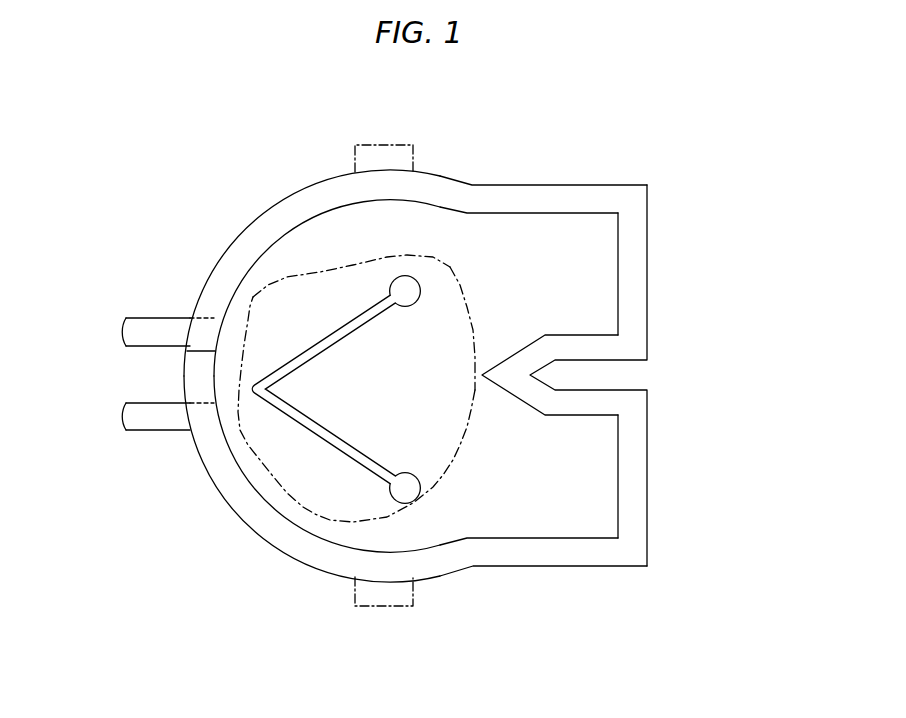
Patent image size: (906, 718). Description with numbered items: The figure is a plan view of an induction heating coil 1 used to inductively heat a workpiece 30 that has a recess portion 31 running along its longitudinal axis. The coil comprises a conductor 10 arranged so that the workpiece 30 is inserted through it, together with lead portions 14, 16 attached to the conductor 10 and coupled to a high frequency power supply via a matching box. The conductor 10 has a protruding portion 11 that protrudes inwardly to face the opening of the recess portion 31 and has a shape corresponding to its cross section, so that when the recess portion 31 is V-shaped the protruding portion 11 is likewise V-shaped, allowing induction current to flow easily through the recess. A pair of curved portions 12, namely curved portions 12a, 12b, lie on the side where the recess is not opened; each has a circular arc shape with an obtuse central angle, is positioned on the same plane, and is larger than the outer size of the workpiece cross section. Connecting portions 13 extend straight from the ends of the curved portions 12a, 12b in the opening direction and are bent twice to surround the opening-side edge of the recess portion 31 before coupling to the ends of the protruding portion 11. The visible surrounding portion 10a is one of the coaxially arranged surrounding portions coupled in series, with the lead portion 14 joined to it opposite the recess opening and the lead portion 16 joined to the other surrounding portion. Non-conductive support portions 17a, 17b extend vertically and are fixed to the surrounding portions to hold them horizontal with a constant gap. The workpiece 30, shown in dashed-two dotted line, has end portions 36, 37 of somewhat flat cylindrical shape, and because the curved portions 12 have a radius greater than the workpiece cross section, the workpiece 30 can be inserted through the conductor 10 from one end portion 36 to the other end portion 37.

The induction heating coil 1 is at (550, 128).
The conductor 10 is at (656, 188).
The surrounding portion 10a is at (656, 233).
The protruding portion 11 is at (509, 354).
The curved portions 12 is at (308, 376).
The curved portion 12a is at (272, 208).
The curved portion 12b is at (252, 524).
The connecting portions 13 is at (576, 185).
The lead portion 14 is at (146, 318).
The lead portion 16 is at (146, 431).
The non-conductive support portion 17a is at (413, 158).
The non-conductive support portion 17b is at (413, 597).
The workpiece 30 is at (459, 449).
The recess portion 31 is at (316, 356).
The end portion 36 is at (447, 263).
The end portion 37 is at (462, 328).